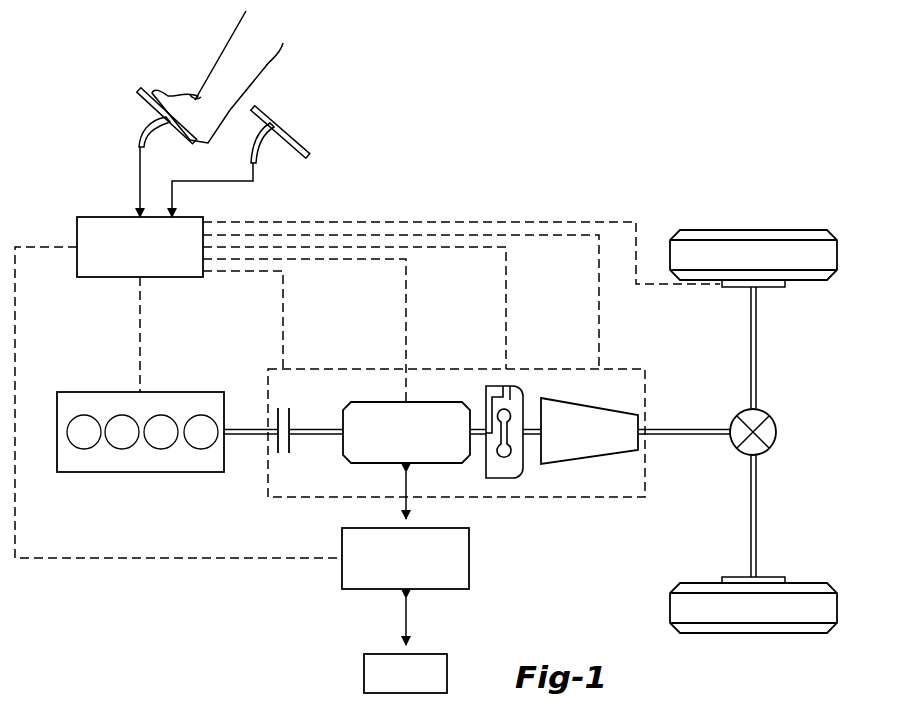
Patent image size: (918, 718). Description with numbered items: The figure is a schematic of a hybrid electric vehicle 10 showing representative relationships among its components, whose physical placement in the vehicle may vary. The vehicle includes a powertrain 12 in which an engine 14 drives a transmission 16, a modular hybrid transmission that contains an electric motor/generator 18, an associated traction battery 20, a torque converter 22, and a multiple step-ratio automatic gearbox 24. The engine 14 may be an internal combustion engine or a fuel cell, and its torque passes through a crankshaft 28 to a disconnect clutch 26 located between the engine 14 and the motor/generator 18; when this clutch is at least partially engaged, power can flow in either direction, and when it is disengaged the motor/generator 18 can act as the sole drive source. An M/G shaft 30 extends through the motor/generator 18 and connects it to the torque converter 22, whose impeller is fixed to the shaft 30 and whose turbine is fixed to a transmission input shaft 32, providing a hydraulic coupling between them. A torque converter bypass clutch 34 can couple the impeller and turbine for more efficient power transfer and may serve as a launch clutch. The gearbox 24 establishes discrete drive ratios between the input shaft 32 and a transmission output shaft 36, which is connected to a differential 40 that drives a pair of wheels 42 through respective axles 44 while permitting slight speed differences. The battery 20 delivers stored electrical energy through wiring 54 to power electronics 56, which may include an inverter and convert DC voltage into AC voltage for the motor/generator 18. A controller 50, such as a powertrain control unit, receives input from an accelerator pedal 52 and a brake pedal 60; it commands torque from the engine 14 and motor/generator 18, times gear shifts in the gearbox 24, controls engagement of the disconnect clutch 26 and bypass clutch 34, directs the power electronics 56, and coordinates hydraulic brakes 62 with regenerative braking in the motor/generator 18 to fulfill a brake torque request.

The hybrid electric vehicle 10 is at (653, 164).
The powertrain 12 is at (222, 597).
The engine 14 is at (75, 392).
The transmission 16 is at (443, 369).
The electric motor/generator 18 is at (386, 402).
The traction battery 20 is at (364, 673).
The torque converter 22 is at (501, 478).
The gearbox 24 is at (580, 464).
The disconnect clutch 26 is at (284, 453).
The crankshaft 28 is at (250, 428).
The M/G shaft 30 is at (318, 428).
The transmission input shaft 32 is at (532, 429).
The torque converter bypass clutch 34 is at (504, 386).
The transmission output shaft 36 is at (697, 429).
The differential 40 is at (777, 433).
The wheels 42 is at (752, 230).
The axles 44 is at (757, 345).
The controller 50 is at (93, 217).
The accelerator pedal 52 is at (140, 108).
The wiring 54 is at (406, 622).
The power electronics 56 is at (470, 558).
The brake pedal 60 is at (278, 122).
The hydraulic brakes 62 is at (778, 287).